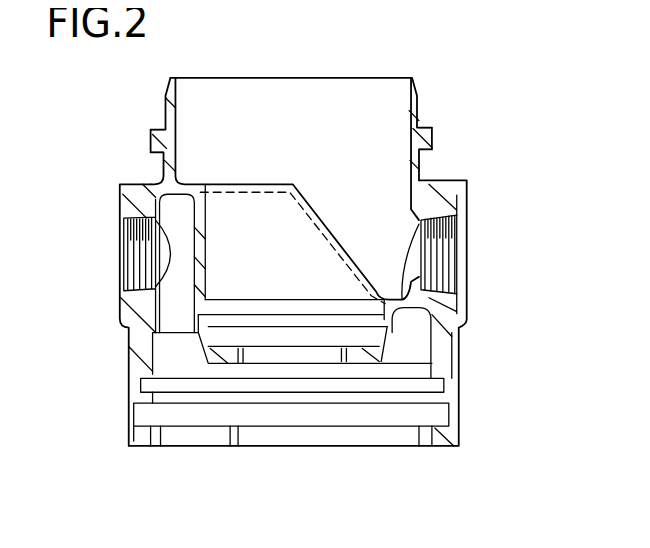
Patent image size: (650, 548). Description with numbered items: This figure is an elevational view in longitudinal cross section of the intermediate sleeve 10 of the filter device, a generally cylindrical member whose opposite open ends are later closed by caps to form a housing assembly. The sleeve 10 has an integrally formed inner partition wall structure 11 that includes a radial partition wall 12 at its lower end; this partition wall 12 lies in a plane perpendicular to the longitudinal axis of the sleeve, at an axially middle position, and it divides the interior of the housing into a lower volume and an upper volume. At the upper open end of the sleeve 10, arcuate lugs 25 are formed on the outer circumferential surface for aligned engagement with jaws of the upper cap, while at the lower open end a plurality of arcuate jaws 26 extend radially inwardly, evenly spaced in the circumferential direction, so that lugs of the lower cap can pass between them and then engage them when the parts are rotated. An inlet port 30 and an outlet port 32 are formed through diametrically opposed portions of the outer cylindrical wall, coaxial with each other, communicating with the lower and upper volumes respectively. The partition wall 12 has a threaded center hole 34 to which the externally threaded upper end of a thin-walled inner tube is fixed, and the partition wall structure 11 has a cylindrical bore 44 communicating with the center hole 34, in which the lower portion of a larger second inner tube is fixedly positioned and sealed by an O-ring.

The intermediate sleeve 10 is at (492, 68).
The inner partition wall structure 11 is at (186, 300).
The radial partition wall 12 is at (207, 352).
The arcuate lugs 25 is at (151, 140).
The arcuate jaws 26 is at (140, 441).
The inlet port 30 is at (135, 287).
The outlet port 32 is at (447, 287).
The threaded center hole 34 is at (333, 357).
The cylindrical bore 44 is at (212, 307).